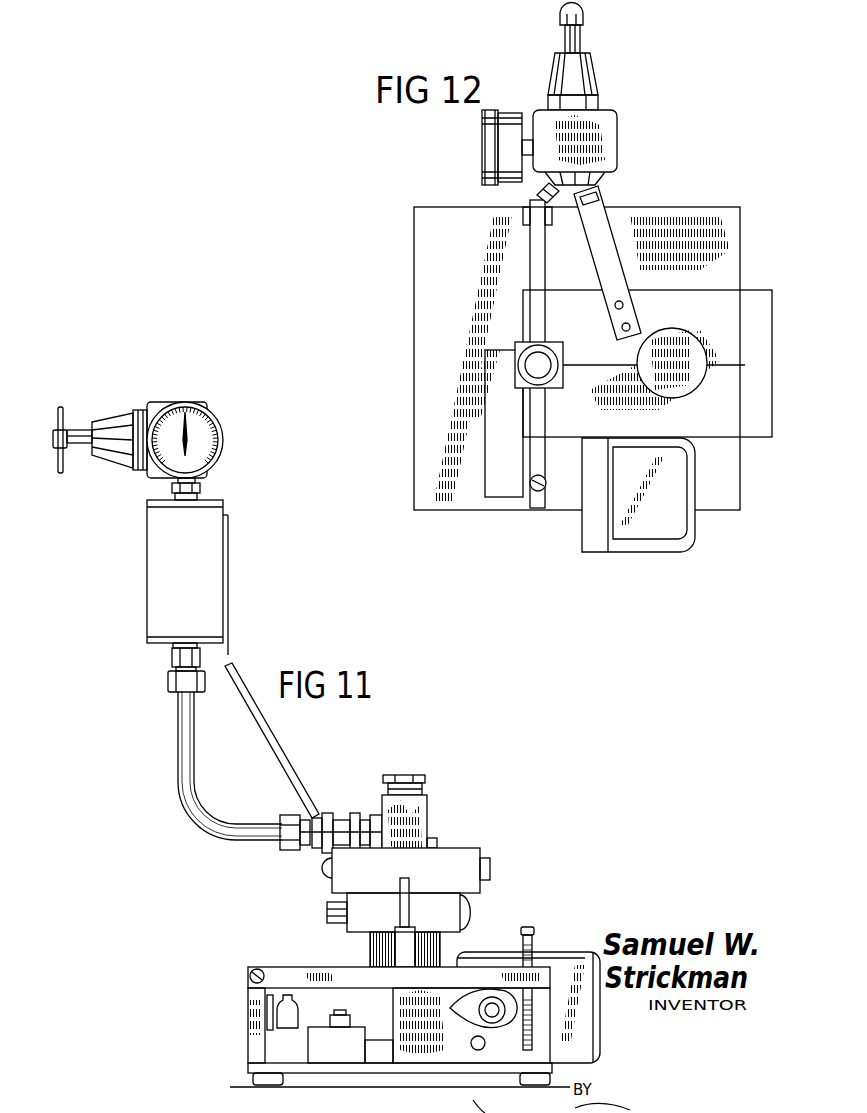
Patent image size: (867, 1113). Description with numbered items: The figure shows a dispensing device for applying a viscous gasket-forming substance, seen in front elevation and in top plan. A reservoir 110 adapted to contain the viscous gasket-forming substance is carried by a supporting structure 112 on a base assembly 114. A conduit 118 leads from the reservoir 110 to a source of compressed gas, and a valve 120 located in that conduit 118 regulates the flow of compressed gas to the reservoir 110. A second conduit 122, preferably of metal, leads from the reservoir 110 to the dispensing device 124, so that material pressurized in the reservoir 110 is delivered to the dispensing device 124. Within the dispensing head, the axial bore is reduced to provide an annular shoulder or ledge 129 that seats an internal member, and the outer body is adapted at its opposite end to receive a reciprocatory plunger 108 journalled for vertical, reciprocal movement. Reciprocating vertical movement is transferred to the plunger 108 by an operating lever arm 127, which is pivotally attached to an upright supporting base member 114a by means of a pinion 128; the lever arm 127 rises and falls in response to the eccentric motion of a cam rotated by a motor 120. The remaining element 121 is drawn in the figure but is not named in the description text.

In FIG. 11, the plunger 108 is at (407, 893).
In FIG. 11, the reservoir 110 is at (152, 550).
In FIG. 12, the supporting structure 112 is at (600, 230).
In FIG. 11, the supporting structure 112 is at (255, 727).
In FIG. 12, the base assembly 114 is at (755, 298).
In FIG. 11, the base assembly 114 is at (475, 873).
In FIG. 11, the upright supporting base member 114a is at (248, 1028).
In FIG. 11, the conduit 118 is at (201, 490).
In FIG. 12, the valve 120 is at (610, 110).
In FIG. 11, the valve 120 is at (112, 423).
In FIG. 12, the motor 121 is at (697, 527).
In FIG. 11, the motor 121 is at (550, 953).
In FIG. 12, the conduit 122 is at (540, 193).
In FIG. 11, the conduit 122 is at (178, 783).
In FIG. 12, the dispensing device 124 is at (515, 370).
In FIG. 11, the dispensing device 124 is at (428, 826).
In FIG. 11, the operating lever arm 127 is at (348, 970).
In FIG. 12, the pinion 128 is at (522, 218).
In FIG. 11, the pinion 128 is at (250, 968).
In FIG. 12, the annular shoulder 129 is at (532, 258).